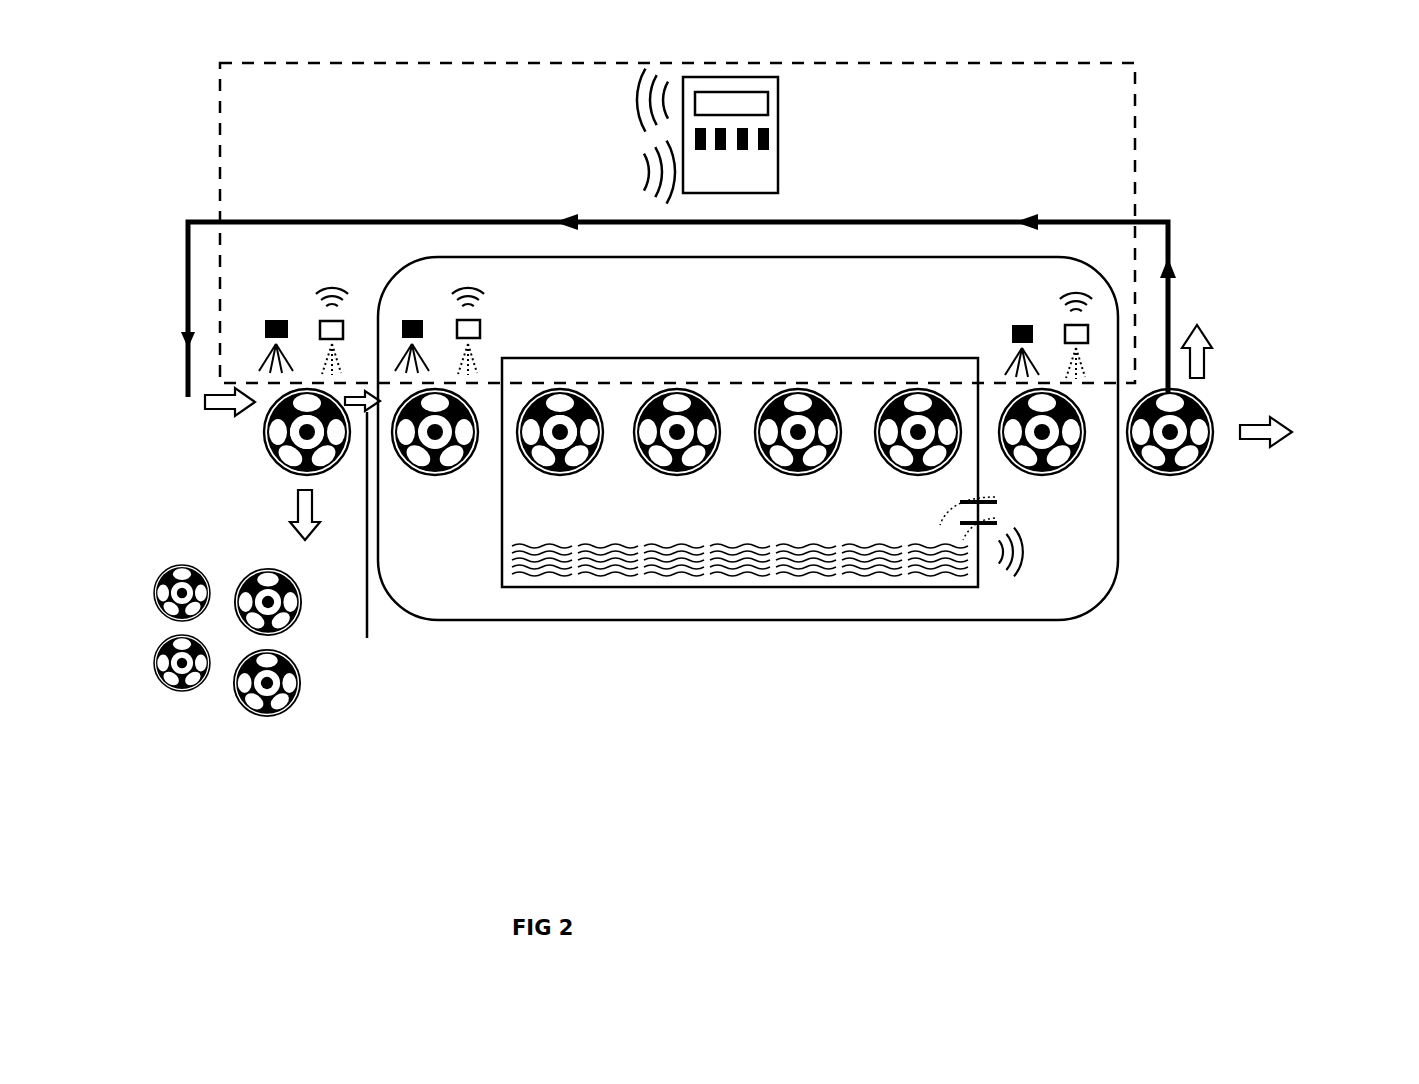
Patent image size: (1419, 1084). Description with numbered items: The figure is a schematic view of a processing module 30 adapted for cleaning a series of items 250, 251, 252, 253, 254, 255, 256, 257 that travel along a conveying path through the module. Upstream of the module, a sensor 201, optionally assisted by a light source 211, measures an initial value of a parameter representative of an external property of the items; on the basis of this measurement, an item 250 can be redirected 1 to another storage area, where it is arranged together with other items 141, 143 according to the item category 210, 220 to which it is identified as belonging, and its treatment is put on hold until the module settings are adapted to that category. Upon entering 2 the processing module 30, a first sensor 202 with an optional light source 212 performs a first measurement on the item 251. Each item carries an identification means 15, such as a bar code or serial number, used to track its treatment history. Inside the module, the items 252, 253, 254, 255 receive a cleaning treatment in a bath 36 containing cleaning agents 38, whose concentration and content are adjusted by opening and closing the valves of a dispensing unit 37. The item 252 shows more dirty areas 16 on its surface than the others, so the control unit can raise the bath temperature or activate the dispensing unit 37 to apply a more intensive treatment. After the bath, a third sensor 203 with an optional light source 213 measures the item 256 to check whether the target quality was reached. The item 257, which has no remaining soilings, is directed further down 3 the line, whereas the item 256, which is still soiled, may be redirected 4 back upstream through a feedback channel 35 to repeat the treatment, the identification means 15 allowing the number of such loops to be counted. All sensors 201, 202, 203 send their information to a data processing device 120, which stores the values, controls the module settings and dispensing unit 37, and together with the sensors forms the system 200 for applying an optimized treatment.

The storage area redirection 1 is at (280, 505).
The entry into processing module 2 is at (362, 535).
The downstream direction 3 is at (1285, 410).
The upstream redirection 4 is at (1215, 350).
The identification means 15 is at (280, 438).
The dirty areas 16 is at (540, 450).
The processing module 30 is at (1036, 644).
The feedback channel 35 is at (1175, 240).
The bath 36 is at (530, 597).
The dispensing unit 37 is at (1000, 508).
The cleaning agents 38 is at (615, 575).
The data processing device 120 is at (798, 102).
The item 141 is at (150, 600).
The item 143 is at (305, 690).
The system 200 is at (1150, 152).
The sensor 201 is at (318, 320).
The first sensor 202 is at (487, 328).
The third sensor 203 is at (1060, 330).
The item category 210 is at (156, 706).
The light source 211 is at (260, 325).
The light source 212 is at (412, 318).
The light source 213 is at (1000, 330).
The item category 220 is at (296, 734).
The item 250 is at (255, 420).
The item 251 is at (480, 408).
The item 252 is at (590, 393).
The item 253 is at (690, 390).
The item 254 is at (797, 390).
The item 255 is at (912, 392).
The item 256 is at (1075, 467).
The item 257 is at (1205, 462).